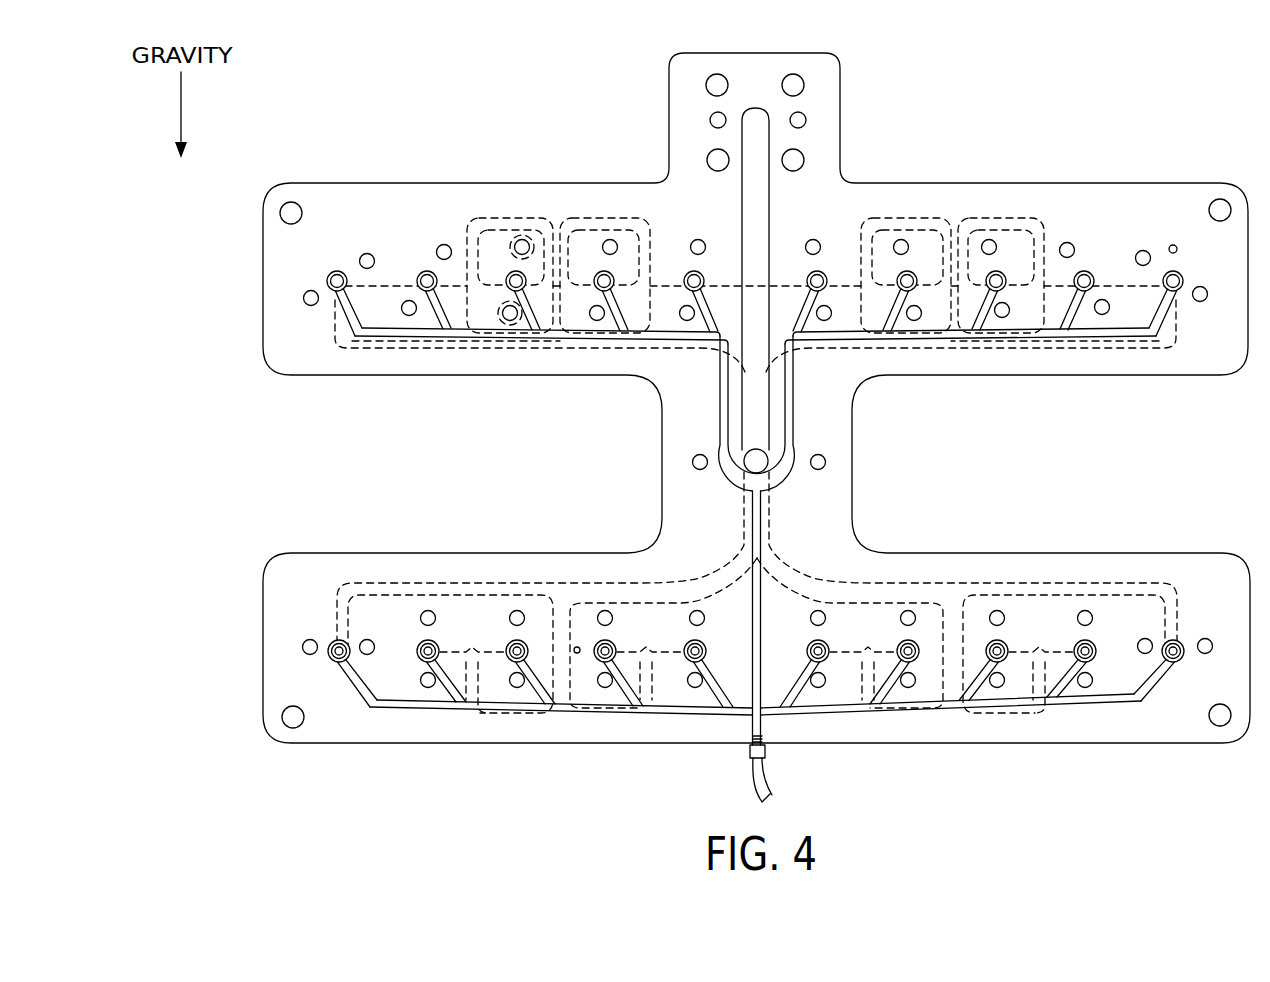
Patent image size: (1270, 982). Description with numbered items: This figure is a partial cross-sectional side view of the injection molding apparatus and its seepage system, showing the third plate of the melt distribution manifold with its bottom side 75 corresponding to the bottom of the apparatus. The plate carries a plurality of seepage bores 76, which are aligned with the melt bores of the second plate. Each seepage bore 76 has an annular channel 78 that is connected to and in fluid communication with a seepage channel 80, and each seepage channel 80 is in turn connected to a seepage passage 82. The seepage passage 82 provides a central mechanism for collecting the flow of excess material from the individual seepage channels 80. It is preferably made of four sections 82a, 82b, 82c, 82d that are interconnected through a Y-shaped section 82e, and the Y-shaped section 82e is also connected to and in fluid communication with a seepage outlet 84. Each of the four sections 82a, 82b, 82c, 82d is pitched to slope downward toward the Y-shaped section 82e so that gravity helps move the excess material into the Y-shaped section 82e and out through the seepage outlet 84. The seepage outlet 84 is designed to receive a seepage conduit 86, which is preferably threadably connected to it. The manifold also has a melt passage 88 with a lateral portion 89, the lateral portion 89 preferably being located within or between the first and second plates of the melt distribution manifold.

The bottom side 75 is at (867, 744).
The seepage bore 76 is at (328, 653).
The annular channel 78 is at (328, 280).
The seepage channel 80 is at (336, 297).
The seepage passage 82 is at (765, 607).
The first section of seepage passage 82a is at (470, 330).
The second section of seepage passage 82b is at (1013, 333).
The third section of seepage passage 82c is at (557, 703).
The fourth section of seepage passage 82d is at (958, 709).
The Y-shaped section 82e is at (720, 407).
The seepage outlet 84 is at (765, 742).
The seepage conduit 86 is at (753, 775).
The melt passage 88 is at (795, 553).
The lateral portion 89 is at (958, 218).